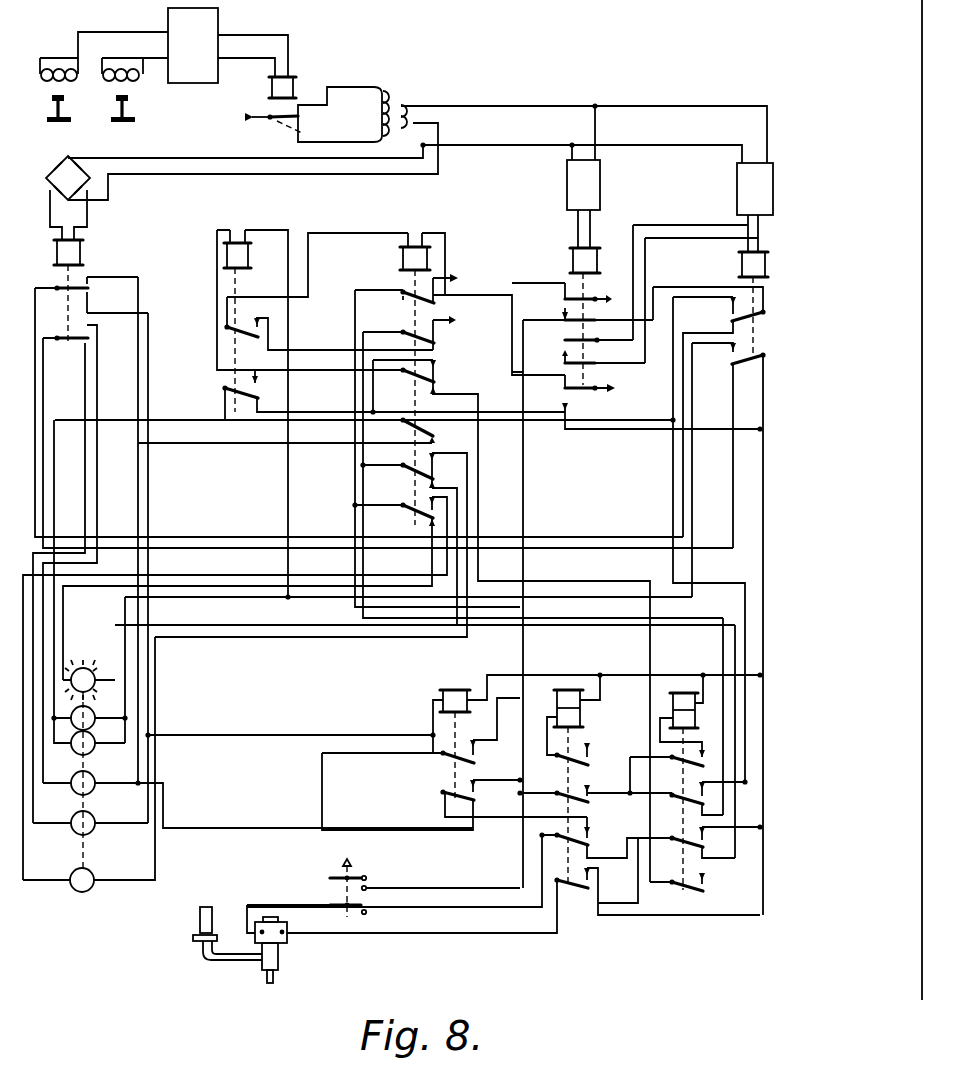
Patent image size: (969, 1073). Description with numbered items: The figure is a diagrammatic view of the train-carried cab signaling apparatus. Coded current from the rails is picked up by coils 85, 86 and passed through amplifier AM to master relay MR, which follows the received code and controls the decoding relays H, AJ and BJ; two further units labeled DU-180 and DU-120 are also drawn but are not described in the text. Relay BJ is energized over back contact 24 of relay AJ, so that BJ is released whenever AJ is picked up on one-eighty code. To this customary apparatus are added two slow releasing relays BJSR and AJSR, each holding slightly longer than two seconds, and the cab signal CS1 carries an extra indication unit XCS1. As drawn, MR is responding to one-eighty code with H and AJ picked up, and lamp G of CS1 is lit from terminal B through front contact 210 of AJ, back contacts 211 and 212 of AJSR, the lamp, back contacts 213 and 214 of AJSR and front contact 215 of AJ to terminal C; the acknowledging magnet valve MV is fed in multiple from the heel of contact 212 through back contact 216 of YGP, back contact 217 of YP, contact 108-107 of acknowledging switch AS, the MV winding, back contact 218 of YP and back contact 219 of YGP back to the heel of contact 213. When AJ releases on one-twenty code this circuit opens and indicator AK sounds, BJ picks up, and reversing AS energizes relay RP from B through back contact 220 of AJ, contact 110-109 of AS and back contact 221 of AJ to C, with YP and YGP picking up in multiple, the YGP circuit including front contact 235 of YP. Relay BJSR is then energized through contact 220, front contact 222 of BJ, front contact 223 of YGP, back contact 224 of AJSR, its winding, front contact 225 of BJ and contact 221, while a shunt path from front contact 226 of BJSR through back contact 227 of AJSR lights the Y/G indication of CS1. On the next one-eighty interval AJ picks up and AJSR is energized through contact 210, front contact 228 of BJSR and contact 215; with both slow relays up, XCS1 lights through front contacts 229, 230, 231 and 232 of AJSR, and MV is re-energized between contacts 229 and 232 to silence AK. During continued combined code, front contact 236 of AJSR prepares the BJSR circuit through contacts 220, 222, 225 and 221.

The coil 85 is at (60, 64).
The coil 86 is at (126, 72).
The amplifier AM is at (168, 20).
The master relay MR is at (270, 90).
The terminal B is at (264, 120).
The terminal C is at (380, 113).
The decoding relay H is at (55, 257).
The decoding unit 180 DU-180 is at (567, 188).
The decoding unit 120 DU-120 is at (737, 192).
The decoding relay AJ is at (594, 297).
The decoding relay BJ is at (709, 286).
The slow releasing relay BJSR is at (227, 261).
The slow releasing relay AJSR is at (403, 263).
The front contact of relay BJSR 228 is at (257, 322).
The front contact of relay BJSR 226 is at (265, 384).
The front contact of relay AJSR 232 is at (403, 292).
The back contact of relay AJSR 214 is at (405, 310).
The front contact of relay AJSR 229 is at (543, 465).
The back contact of relay AJSR 211 is at (408, 348).
The front contact of relay AJSR 236 is at (433, 366).
The back contact of relay AJSR 224 is at (433, 388).
The back contact of relay AJSR 227 is at (433, 440).
The front contact of relay AJSR 230 is at (430, 462).
The back contact of relay AJSR 212 is at (430, 483).
The front contact of relay AJSR 231 is at (430, 502).
The back contact of relay AJSR 213 is at (430, 520).
The front contact of relay AJ 210 is at (563, 294).
The back contact of relay AJ 220 is at (565, 311).
The back contact of relay AJ 24 is at (565, 355).
The front contact of relay AJ 215 is at (565, 383).
The back contact of relay AJ 221 is at (567, 407).
The front contact of relay BJ 222 is at (730, 307).
The front contact of relay BJ 225 is at (733, 352).
The cab signal CS1 is at (253, 590).
The extra distinctive indication unit XCS1 is at (89, 764).
The acknowledging relay RP is at (541, 748).
The acknowledging relay YP is at (557, 690).
The front contact of relay YP 235 is at (588, 789).
The back contact of relay YP 217 is at (588, 846).
The back contact of relay YP 218 is at (592, 895).
The acknowledging relay YGP is at (673, 696).
The back contact of relay YGP 216 is at (700, 810).
The back contact of relay YGP 219 is at (700, 855).
The front contact of relay YGP 223 is at (703, 877).
The acknowledging switch AS is at (356, 876).
The contact of acknowledging switch 110 is at (366, 886).
The contact of acknowledging switch 109 is at (345, 880).
The contact of acknowledging switch 108 is at (366, 913).
The contact of acknowledging switch 107 is at (347, 917).
The acknowledging magnet valve MV is at (289, 925).
The acknowledging indicator AK is at (200, 920).